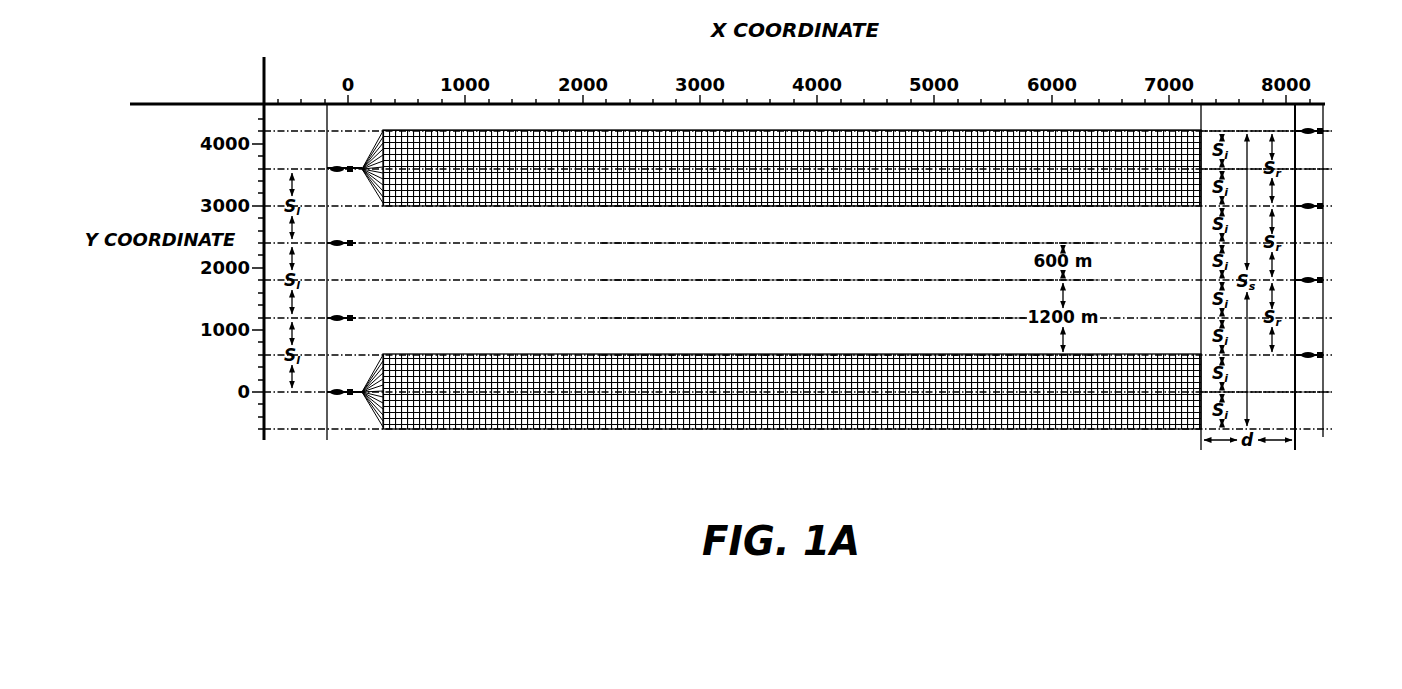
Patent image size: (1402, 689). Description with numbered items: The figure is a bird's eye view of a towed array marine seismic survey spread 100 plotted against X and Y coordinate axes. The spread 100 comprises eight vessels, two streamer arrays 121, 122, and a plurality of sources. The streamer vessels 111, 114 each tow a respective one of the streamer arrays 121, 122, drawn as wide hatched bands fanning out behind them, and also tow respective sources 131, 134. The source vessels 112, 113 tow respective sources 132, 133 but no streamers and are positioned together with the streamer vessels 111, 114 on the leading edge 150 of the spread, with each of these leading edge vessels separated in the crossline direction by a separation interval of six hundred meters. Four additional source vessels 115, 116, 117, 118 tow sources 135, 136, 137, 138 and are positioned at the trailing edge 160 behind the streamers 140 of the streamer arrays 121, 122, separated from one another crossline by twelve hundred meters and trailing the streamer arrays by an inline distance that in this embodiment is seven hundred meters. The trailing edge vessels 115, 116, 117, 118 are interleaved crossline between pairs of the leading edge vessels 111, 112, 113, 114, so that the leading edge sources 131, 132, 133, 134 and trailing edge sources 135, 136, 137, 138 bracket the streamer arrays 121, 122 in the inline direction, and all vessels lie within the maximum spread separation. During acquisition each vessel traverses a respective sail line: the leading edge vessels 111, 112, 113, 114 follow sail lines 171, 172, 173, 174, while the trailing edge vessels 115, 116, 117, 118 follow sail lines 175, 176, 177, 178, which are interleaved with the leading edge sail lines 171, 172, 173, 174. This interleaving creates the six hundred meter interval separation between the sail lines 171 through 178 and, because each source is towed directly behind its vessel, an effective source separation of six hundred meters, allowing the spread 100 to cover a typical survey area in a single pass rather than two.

The marine seismic survey spread 100 is at (532, 463).
The streamer vessel 111 is at (338, 162).
The source vessel 112 is at (340, 247).
The source vessel 113 is at (340, 314).
The streamer vessel 114 is at (337, 396).
The source vessel 115 is at (1312, 129).
The source vessel 116 is at (1312, 203).
The source vessel 117 is at (1312, 277).
The source vessel 118 is at (1312, 352).
The streamer array 121 is at (377, 140).
The streamer array 122 is at (365, 396).
The source 131 is at (350, 174).
The source 132 is at (351, 240).
The source 133 is at (352, 321).
The source 134 is at (350, 388).
The source 135 is at (1322, 135).
The source 136 is at (1322, 210).
The source 137 is at (1322, 284).
The source 138 is at (1322, 359).
The streamer 140 is at (1117, 131).
The leading edge 150 is at (328, 112).
The trailing edge 160 is at (1325, 407).
The sail line 171 is at (1288, 168).
The sail line 172 is at (703, 241).
The sail line 173 is at (703, 317).
The sail line 174 is at (1270, 393).
The sail line 175 is at (1235, 131).
The sail line 176 is at (884, 206).
The sail line 177 is at (703, 279).
The sail line 178 is at (888, 354).